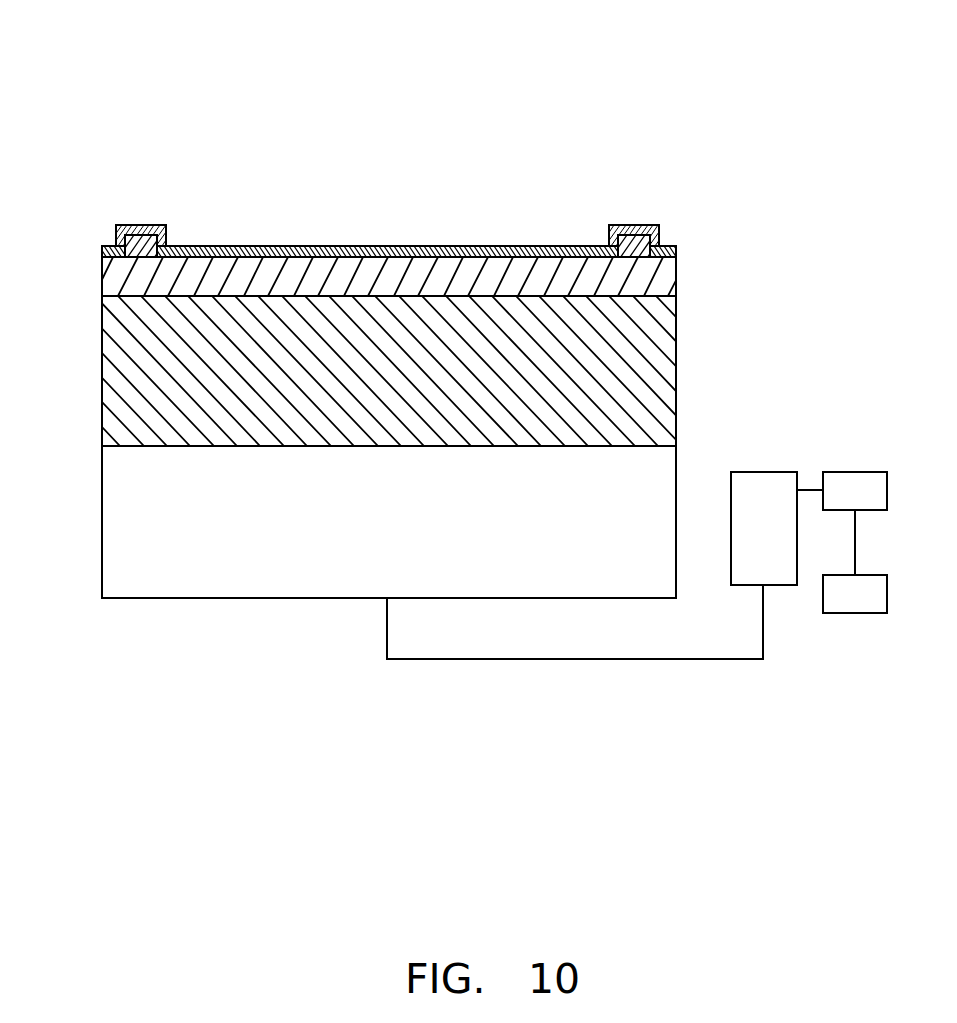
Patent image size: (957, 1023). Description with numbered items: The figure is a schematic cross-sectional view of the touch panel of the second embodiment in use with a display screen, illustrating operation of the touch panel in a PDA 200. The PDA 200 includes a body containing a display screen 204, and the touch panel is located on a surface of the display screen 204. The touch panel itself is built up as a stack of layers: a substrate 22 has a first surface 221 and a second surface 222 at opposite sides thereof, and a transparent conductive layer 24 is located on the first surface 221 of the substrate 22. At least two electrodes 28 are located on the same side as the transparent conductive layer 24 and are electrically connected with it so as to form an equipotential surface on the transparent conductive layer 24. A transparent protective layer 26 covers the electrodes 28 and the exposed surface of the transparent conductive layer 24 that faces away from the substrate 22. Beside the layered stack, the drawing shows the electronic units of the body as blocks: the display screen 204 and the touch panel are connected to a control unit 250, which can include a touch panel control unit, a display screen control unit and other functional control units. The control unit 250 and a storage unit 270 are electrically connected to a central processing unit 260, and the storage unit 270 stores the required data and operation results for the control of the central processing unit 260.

The PDA 200 is at (444, 52).
The display screen 204 is at (240, 543).
The substrate 22 is at (411, 376).
The first surface 221 is at (182, 297).
The second surface 222 is at (167, 437).
The transparent conductive layer 24 is at (643, 280).
The transparent protective layer 26 is at (260, 247).
The electrodes 28 is at (135, 233).
The control unit 250 is at (763, 472).
The central processing unit 260 is at (853, 470).
The storage unit 270 is at (853, 615).